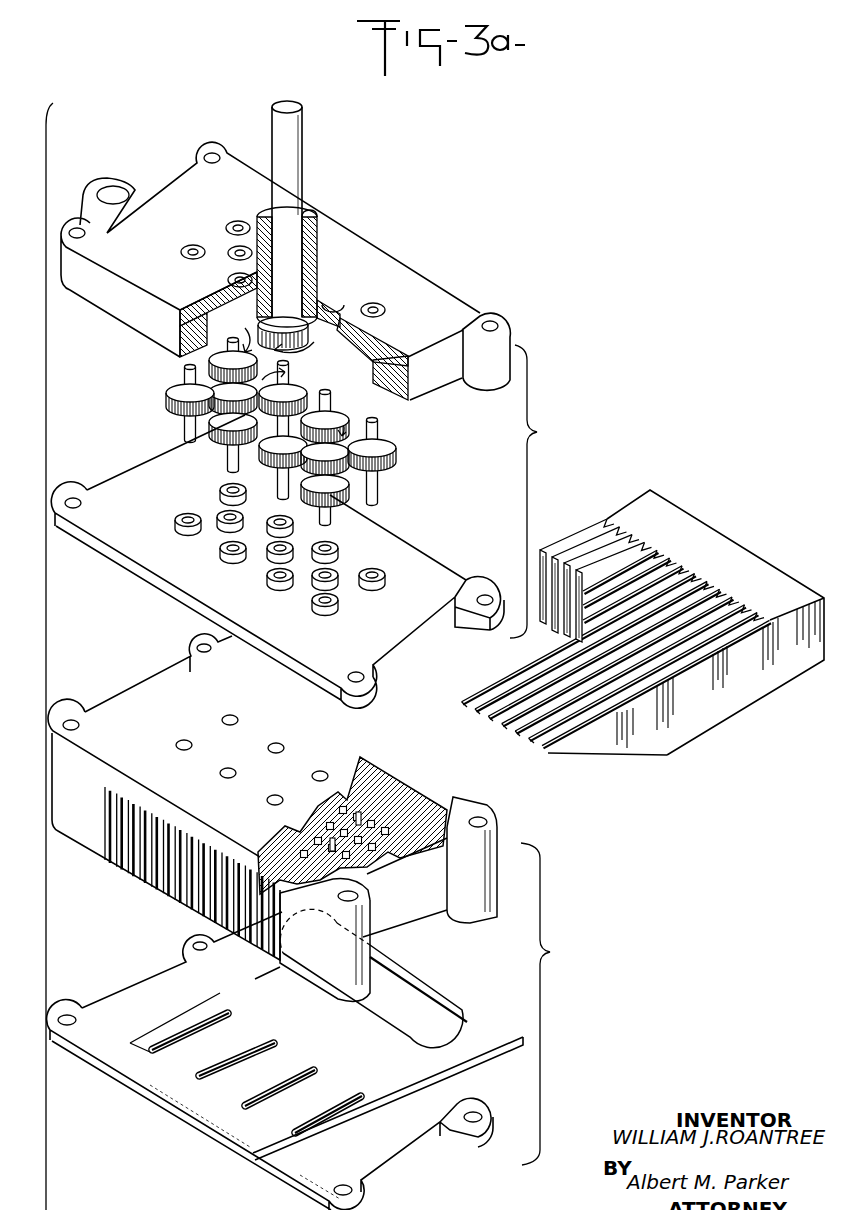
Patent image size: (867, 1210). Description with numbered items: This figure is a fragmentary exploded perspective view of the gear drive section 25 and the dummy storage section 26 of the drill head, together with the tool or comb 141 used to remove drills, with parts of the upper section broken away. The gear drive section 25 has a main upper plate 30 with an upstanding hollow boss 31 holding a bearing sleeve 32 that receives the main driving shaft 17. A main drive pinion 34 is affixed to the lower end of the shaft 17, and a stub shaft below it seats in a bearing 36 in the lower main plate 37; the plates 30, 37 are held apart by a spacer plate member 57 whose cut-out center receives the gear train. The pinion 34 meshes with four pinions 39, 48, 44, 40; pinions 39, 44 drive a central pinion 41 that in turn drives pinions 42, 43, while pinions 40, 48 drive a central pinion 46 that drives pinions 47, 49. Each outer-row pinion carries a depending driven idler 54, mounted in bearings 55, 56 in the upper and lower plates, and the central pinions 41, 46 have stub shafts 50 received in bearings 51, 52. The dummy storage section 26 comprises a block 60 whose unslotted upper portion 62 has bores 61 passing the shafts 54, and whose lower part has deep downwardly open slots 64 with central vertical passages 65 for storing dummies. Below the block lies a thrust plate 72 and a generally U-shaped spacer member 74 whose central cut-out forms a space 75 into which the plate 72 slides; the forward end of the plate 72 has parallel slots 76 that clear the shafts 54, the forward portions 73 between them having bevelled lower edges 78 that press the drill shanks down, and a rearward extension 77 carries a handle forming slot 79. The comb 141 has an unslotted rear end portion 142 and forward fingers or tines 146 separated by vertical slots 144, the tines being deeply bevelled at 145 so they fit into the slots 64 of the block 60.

The main driving shaft 17 is at (302, 133).
The gear drive section 25 is at (538, 491).
The dummy storage section 26 is at (548, 1004).
The main upper plate 30 is at (418, 275).
The hollow boss 31 is at (313, 240).
The bearing sleeve 32 is at (317, 247).
The main drive pinion 34 is at (307, 333).
The bearing 36 is at (268, 565).
The lower main plate 37 is at (433, 555).
The pinion 39 is at (300, 384).
The pinion 40 is at (222, 489).
The pinion 41 is at (215, 370).
The pinion 42 is at (165, 392).
The pinion 43 is at (231, 370).
The pinion 44 is at (200, 447).
The pinion 46 is at (388, 466).
The pinion 47 is at (380, 443).
The pinion 48 is at (336, 410).
The pinion 49 is at (347, 507).
The stub shaft 50 is at (268, 362).
The bearing 51 is at (233, 250).
The bearing 52 is at (220, 530).
The driven idler 54 is at (228, 455).
The bearing 55 is at (190, 245).
The bearing 56 is at (182, 512).
The spacer plate member 57 is at (420, 373).
The block 60 is at (74, 820).
The bore 61 is at (200, 715).
The unslotted upper portion 62 is at (153, 693).
The slot 64 is at (147, 873).
The vertical passage 65 is at (363, 865).
The thrust plate 72 is at (448, 1067).
The forward portion 73 is at (173, 1058).
The spacer member 74 is at (393, 1137).
The space 75 is at (397, 1103).
The slot 76 is at (263, 1043).
The rearward extension 77 is at (478, 1012).
The bevelled lower edge 78 is at (203, 1073).
The handle forming slot 79 is at (411, 990).
The tool or comb 141 is at (643, 626).
The rear end portion 142 is at (712, 540).
The vertical slot 144 is at (540, 748).
The bevel 145 is at (602, 755).
The finger or tine 146 is at (590, 555).